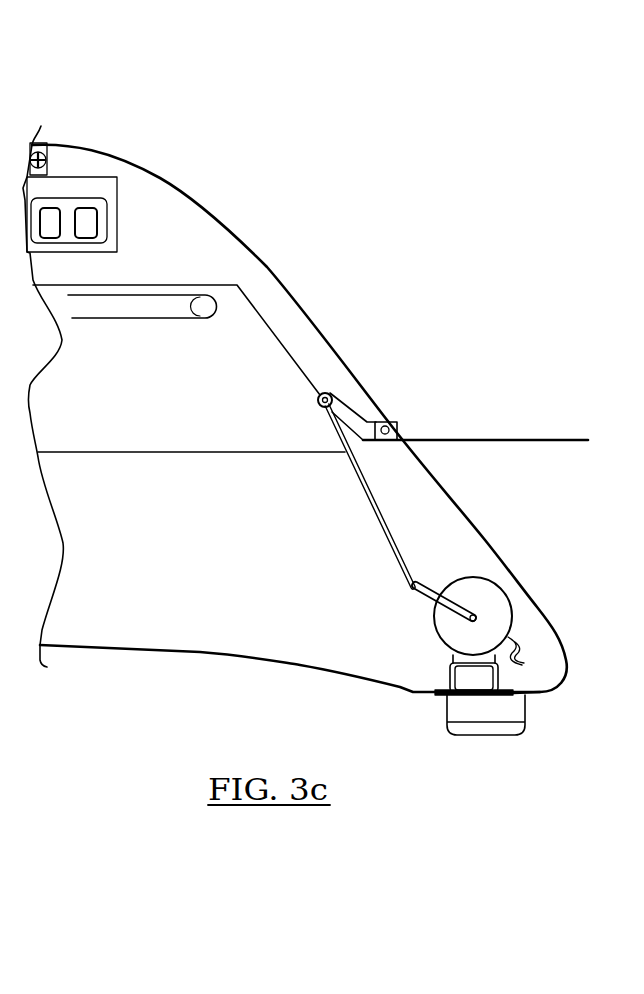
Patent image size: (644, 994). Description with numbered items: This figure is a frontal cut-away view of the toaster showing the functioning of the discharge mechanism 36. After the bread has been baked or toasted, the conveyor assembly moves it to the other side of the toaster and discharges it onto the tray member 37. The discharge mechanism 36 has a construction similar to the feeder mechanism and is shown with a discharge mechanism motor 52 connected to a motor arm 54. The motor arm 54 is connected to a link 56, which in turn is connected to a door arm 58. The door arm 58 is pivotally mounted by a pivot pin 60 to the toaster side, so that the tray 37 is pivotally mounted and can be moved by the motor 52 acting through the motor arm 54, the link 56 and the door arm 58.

The discharge mechanism 36 is at (440, 507).
The tray member 37 is at (542, 440).
The discharge mechanism motor 52 is at (490, 600).
The motor arm 54 is at (433, 600).
The link 56 is at (375, 513).
The door arm 58 is at (345, 418).
The pivot pin 60 is at (396, 428).